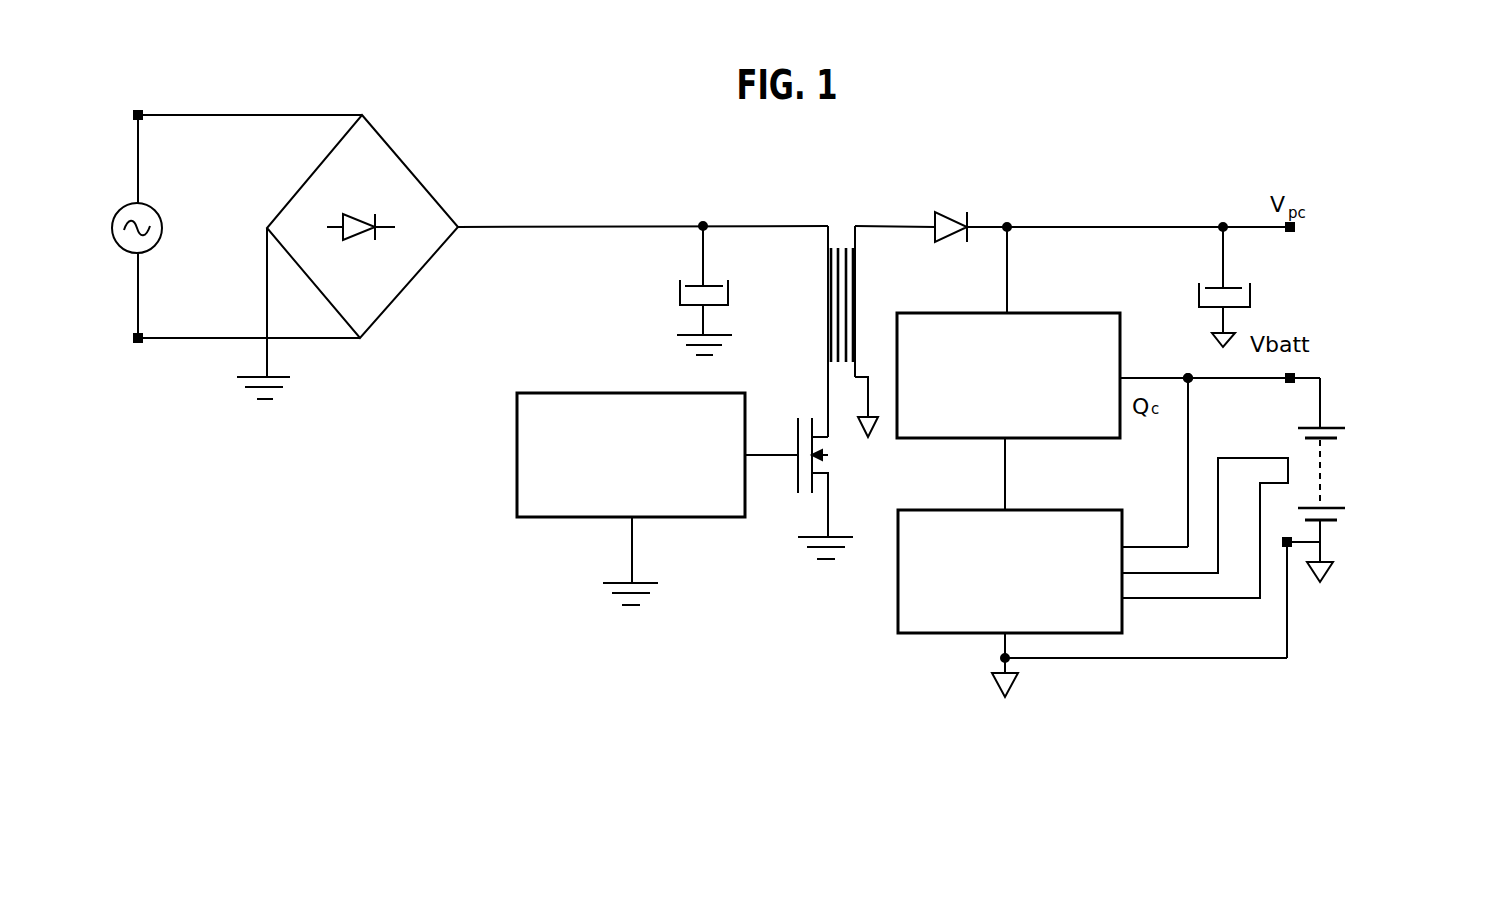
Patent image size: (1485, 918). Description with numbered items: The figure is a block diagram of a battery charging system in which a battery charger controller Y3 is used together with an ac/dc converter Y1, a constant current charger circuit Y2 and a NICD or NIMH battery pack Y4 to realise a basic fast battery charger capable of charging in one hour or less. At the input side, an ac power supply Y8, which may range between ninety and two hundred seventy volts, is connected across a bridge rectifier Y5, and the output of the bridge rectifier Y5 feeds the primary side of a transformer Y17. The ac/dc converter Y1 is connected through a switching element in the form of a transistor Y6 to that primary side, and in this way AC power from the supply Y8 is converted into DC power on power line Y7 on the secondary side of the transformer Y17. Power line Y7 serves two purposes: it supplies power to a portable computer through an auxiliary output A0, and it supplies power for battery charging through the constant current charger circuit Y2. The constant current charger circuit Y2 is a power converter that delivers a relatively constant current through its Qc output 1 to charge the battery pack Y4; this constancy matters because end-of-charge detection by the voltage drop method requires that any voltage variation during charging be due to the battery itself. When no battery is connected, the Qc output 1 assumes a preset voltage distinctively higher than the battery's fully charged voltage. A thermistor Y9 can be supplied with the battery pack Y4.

The ac/dc converter Y1 is at (572, 517).
The constant current charger circuit Y2 is at (1092, 313).
The battery charger controller Y3 is at (1129, 516).
The battery pack Y4 is at (1336, 462).
The bridge rectifier Y5 is at (433, 196).
The transistor Y6 is at (803, 488).
The power line Y7 is at (999, 226).
The ac power supply Y8 is at (115, 237).
The thermistor Y9 is at (1205, 528).
The transformer Y17 is at (820, 282).
The Qc output 1 is at (1166, 378).
The auxiliary output A0 is at (1289, 240).